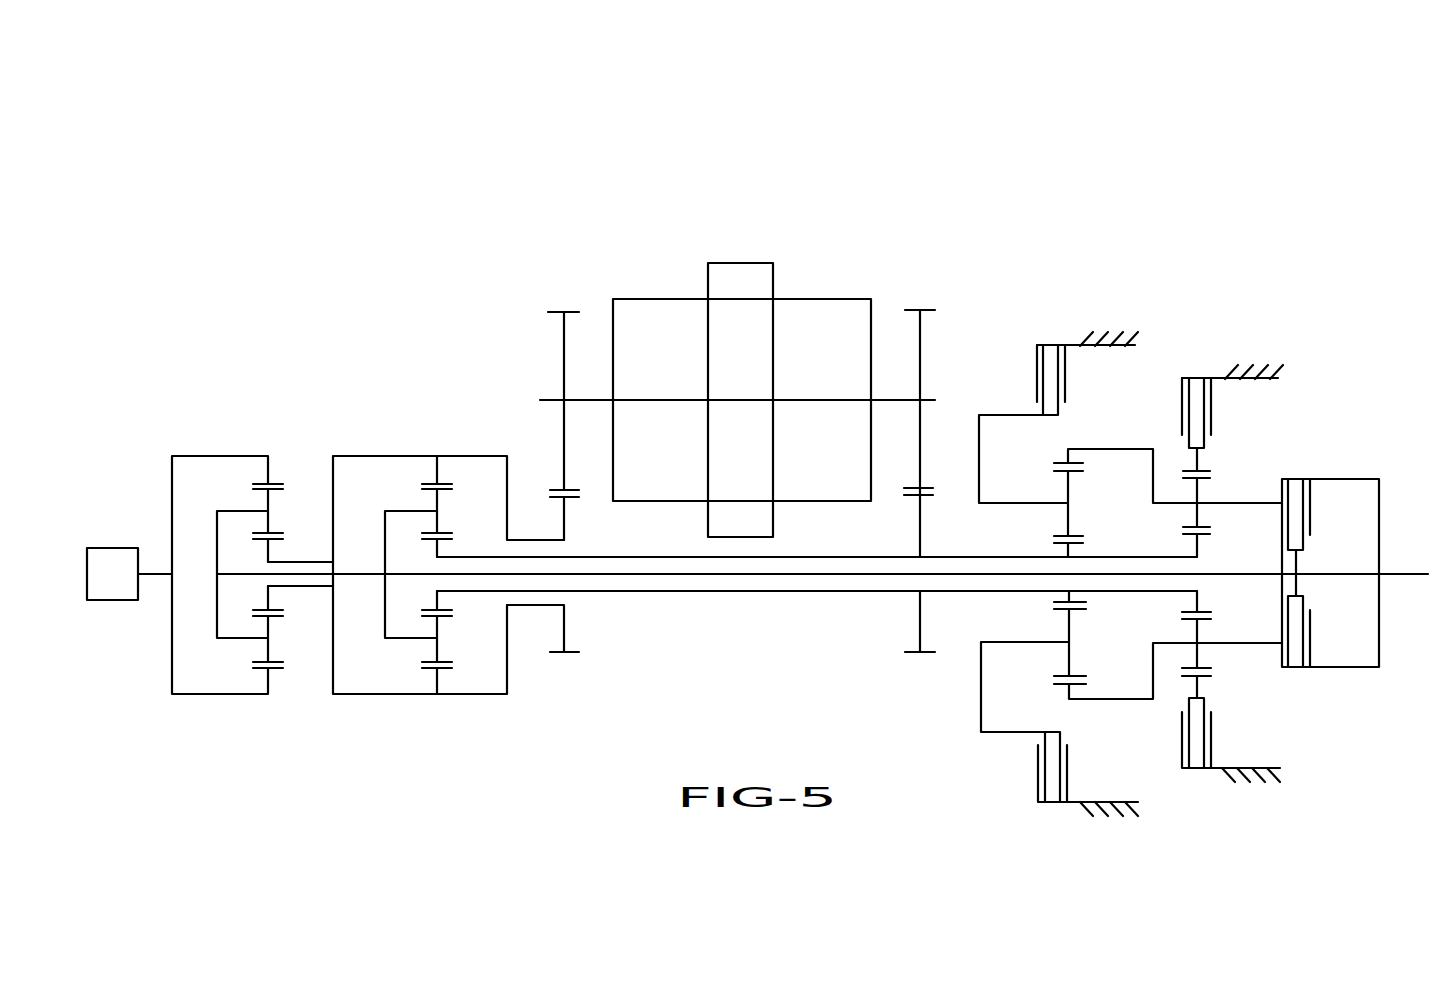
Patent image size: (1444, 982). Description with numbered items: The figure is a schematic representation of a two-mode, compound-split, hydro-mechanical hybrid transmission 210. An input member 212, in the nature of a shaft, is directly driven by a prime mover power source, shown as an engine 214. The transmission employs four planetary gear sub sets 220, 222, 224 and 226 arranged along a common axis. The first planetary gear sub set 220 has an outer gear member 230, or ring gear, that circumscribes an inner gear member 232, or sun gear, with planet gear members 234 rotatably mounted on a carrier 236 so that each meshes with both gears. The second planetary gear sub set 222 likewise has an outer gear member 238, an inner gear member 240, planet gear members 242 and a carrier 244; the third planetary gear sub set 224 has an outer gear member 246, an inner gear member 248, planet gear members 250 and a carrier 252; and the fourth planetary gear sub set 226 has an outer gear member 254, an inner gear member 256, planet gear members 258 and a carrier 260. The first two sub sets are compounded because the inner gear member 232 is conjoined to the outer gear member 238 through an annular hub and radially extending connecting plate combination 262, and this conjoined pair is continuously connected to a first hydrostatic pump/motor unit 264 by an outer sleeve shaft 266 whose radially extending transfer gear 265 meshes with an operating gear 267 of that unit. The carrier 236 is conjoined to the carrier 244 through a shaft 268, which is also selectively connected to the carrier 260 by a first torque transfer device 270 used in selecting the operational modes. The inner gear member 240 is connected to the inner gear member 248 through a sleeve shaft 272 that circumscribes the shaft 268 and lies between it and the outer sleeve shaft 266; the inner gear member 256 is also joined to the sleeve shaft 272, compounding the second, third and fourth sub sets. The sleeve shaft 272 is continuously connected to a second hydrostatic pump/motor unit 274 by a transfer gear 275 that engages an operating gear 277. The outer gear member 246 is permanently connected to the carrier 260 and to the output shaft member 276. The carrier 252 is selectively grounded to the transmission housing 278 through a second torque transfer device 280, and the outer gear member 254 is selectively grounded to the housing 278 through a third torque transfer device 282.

The hybrid transmission 210 is at (1133, 192).
The input member 212 is at (153, 582).
The engine 214 is at (105, 568).
The first planetary gear sub set 220 is at (312, 682).
The second planetary gear sub set 222 is at (477, 682).
The third planetary gear sub set 224 is at (1100, 432).
The fourth planetary gear sub set 226 is at (1226, 452).
The outer gear member 230 is at (277, 482).
The inner gear member 232 is at (281, 603).
The planet gear members 234 is at (266, 500).
The carrier 236 is at (216, 603).
The outer gear member 238 is at (445, 482).
The inner gear member 240 is at (449, 603).
The planet gear members 242 is at (436, 500).
The carrier 244 is at (385, 603).
The outer gear member 246 is at (1058, 462).
The inner gear member 248 is at (1066, 598).
The planet gear members 250 is at (1068, 480).
The carrier 252 is at (1052, 503).
The outer gear member 254 is at (1206, 677).
The inner gear member 256 is at (1206, 537).
The planet gear members 258 is at (1199, 490).
The carrier 260 is at (1152, 468).
The annular hub and radially extending connecting plate combination 262 is at (333, 486).
The first hydrostatic pump/motor unit 264 is at (655, 284).
The transfer gear 265 is at (566, 532).
The outer sleeve shaft 266 is at (532, 605).
The operating gear 267 is at (563, 362).
The shaft 268 is at (658, 576).
The first torque transfer device 270 is at (1321, 646).
The sleeve shaft 272 is at (752, 593).
The second hydrostatic pump/motor unit 274 is at (823, 284).
The transfer gear 275 is at (918, 607).
The output shaft member 276 is at (1407, 573).
The operating gear 277 is at (921, 362).
The transmission housing 278 is at (1092, 340).
The second torque transfer device 280 is at (1030, 362).
The third torque transfer device 282 is at (1175, 378).